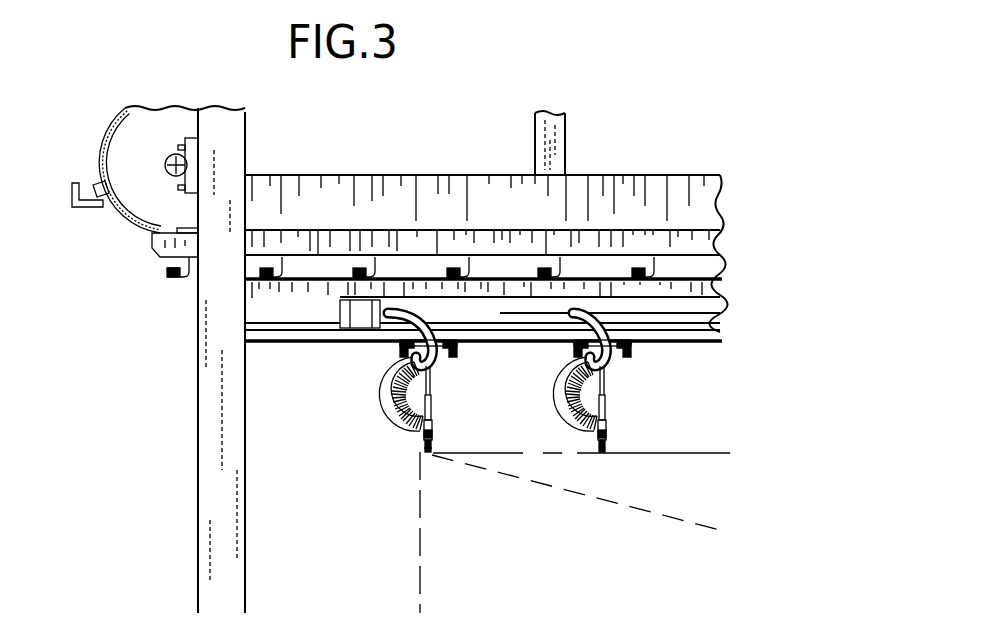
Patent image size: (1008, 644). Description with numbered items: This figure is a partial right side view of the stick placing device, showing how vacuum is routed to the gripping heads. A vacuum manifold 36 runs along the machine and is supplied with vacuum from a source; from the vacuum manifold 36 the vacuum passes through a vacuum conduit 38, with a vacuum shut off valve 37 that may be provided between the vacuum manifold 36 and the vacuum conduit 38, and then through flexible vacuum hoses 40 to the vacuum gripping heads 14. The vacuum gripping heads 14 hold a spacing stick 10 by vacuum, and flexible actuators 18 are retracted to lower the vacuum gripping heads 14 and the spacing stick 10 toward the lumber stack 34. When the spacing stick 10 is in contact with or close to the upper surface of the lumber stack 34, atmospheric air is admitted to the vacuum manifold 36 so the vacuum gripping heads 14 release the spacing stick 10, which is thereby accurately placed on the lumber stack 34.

The spacing stick 10 is at (167, 267).
The vacuum gripping heads 14 is at (423, 442).
The flexible actuators 18 is at (435, 406).
The lumber stack 34 is at (512, 551).
The vacuum manifold 36 is at (340, 313).
The vacuum shut off valve 37 is at (388, 297).
The vacuum conduit 38 is at (398, 338).
The flexible vacuum hoses 40 is at (395, 400).